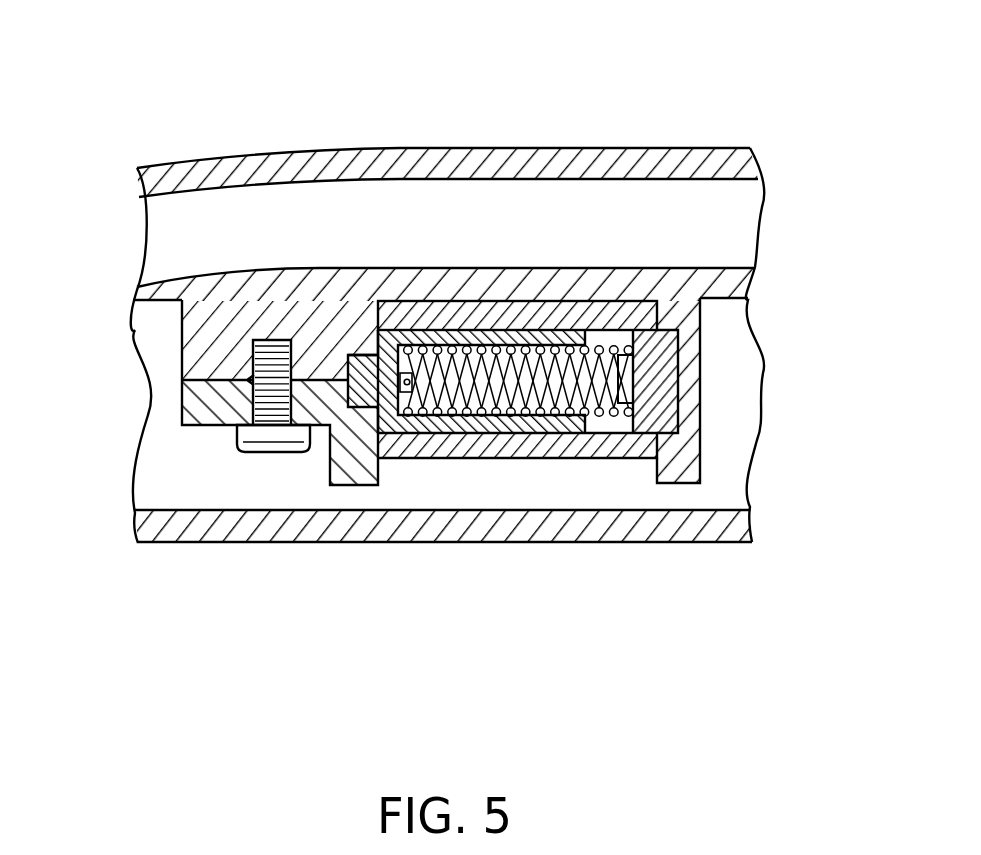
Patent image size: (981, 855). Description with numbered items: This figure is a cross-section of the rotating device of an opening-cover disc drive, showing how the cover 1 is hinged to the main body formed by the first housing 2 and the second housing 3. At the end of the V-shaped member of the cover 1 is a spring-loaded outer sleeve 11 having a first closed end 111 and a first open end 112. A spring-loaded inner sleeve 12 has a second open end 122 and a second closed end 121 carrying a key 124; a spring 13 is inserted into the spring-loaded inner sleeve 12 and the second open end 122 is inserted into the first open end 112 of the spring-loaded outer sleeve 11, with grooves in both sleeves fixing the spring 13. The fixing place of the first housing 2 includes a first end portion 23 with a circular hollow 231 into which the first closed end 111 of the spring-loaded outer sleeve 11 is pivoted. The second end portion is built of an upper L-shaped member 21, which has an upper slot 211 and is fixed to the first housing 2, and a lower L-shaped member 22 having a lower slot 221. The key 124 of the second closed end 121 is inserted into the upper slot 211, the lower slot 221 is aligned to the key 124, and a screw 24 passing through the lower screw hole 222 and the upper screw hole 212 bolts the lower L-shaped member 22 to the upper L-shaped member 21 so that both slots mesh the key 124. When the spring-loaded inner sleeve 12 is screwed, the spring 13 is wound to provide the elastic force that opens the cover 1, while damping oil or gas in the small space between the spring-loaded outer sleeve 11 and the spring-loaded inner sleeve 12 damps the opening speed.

The cover 1 is at (668, 167).
The first housing 2 is at (548, 280).
The second housing 3 is at (682, 525).
The spring-loaded outer sleeve 11 is at (602, 436).
The first closed end 111 is at (668, 397).
The first open end 112 is at (397, 302).
The spring-loaded inner sleeve 12 is at (465, 318).
The second closed end 121 is at (403, 441).
The second open end 122 is at (718, 273).
The key 124 is at (368, 413).
The spring 13 is at (551, 420).
The upper L-shaped member 21 is at (207, 332).
The upper slot 211 is at (364, 350).
The upper screw hole 212 is at (233, 378).
The lower L-shaped member 22 is at (207, 410).
The lower slot 221 is at (353, 412).
The lower screw hole 222 is at (320, 427).
The first end portion 23 is at (685, 465).
The circular hollow 231 is at (677, 355).
The screw 24 is at (255, 448).